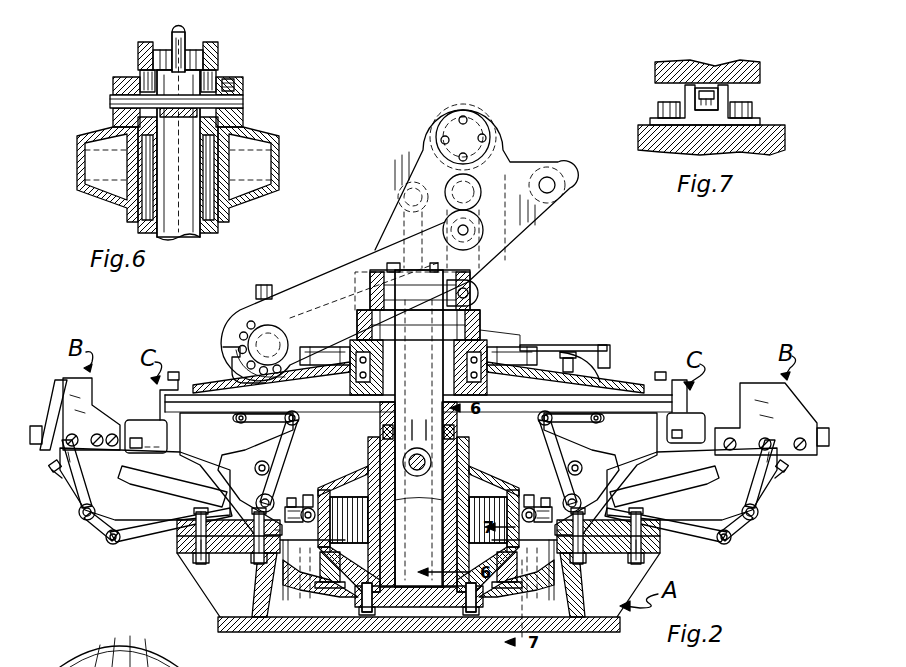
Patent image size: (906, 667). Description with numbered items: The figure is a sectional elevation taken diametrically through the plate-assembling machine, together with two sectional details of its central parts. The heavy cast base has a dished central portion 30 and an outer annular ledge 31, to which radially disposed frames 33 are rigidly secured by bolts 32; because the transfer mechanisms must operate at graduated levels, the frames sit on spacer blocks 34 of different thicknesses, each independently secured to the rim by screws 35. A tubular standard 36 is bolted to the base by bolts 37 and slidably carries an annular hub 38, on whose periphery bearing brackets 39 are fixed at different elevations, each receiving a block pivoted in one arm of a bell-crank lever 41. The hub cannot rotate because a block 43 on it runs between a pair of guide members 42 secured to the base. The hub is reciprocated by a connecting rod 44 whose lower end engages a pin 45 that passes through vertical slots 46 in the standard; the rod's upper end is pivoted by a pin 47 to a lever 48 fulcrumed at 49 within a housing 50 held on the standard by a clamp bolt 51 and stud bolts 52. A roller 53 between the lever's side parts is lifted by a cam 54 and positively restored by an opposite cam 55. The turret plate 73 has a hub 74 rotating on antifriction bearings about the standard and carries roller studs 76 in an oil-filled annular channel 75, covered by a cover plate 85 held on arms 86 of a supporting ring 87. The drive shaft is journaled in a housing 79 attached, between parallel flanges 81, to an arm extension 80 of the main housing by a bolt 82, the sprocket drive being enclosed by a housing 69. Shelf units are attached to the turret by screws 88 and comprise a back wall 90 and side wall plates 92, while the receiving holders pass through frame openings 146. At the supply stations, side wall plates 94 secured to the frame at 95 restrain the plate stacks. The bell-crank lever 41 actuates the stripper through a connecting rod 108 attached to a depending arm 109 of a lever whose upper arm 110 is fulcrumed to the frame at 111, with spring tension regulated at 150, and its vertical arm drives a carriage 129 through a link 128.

In FIG. 7, the dished central portion 30 is at (765, 140).
In FIG. 2, the dished central portion 30 is at (478, 632).
In FIG. 2, the annular ledge 31 is at (183, 556).
In FIG. 2, the bolts 32 is at (202, 562).
In FIG. 2, the frames 33 is at (76, 480).
In FIG. 2, the spacer blocks 34 is at (223, 545).
In FIG. 2, the screws 35 is at (262, 556).
In FIG. 6, the tubular standard 36 is at (206, 232).
In FIG. 2, the tubular standard 36 is at (405, 607).
In FIG. 2, the bolts 37 is at (366, 614).
In FIG. 6, the hub 38 is at (281, 160).
In FIG. 7, the hub 38 is at (660, 68).
In FIG. 2, the hub 38 is at (468, 478).
In FIG. 2, the bearing brackets 39 is at (306, 495).
In FIG. 2, the bell-crank lever 41 is at (284, 445).
In FIG. 7, the guide members 42 is at (662, 116).
In FIG. 2, the guide members 42 is at (518, 565).
In FIG. 7, the block 43 is at (712, 85).
In FIG. 6, the connecting rod 44 is at (189, 36).
In FIG. 2, the connecting rod 44 is at (413, 433).
In FIG. 6, the pin 45 is at (246, 101).
In FIG. 2, the pin 45 is at (403, 461).
In FIG. 6, the vertical slots 46 is at (148, 82).
In FIG. 2, the vertical slots 46 is at (452, 433).
In FIG. 2, the pin 47 is at (400, 197).
In FIG. 2, the lever 48 is at (497, 178).
In FIG. 2, the fulcrum 49 is at (556, 185).
In FIG. 2, the housing 50 is at (540, 218).
In FIG. 2, the clamp bolt 51 is at (479, 294).
In FIG. 2, the stud bolts 52 is at (472, 279).
In FIG. 2, the roller 53 is at (450, 186).
In FIG. 2, the cam 54 is at (486, 235).
In FIG. 2, the cam 55 is at (488, 132).
In FIG. 2, the housing 69 is at (350, 283).
In FIG. 2, the turret plate 73 is at (636, 383).
In FIG. 2, the hub 74 is at (358, 396).
In FIG. 2, the annular channel 75 is at (612, 350).
In FIG. 2, the roller studs 76 is at (575, 358).
In FIG. 2, the housing 79 is at (239, 340).
In FIG. 2, the arm extension 80 is at (290, 292).
In FIG. 2, the parallel flanges 81 is at (242, 318).
In FIG. 2, the bolt 82 is at (264, 285).
In FIG. 2, the cover plate 85 is at (575, 345).
In FIG. 2, the arms 86 is at (522, 338).
In FIG. 2, the supporting ring 87 is at (480, 320).
In FIG. 2, the screws 88 is at (176, 378).
In FIG. 2, the back wall 90 is at (682, 395).
In FIG. 2, the side wall plates 92 is at (145, 420).
In FIG. 2, the side wall plates 94 is at (58, 395).
In FIG. 2, the fastening 95 is at (110, 433).
In FIG. 2, the connecting rod 108 is at (205, 492).
In FIG. 2, the depending arm 109 is at (110, 542).
In FIG. 2, the upper arm 110 is at (74, 480).
In FIG. 2, the fulcrum 111 is at (84, 521).
In FIG. 2, the link 128 is at (299, 418).
In FIG. 2, the carriage 129 is at (233, 420).
In FIG. 2, the frame openings 146 is at (212, 446).
In FIG. 2, the tension adjuster 150 is at (58, 470).